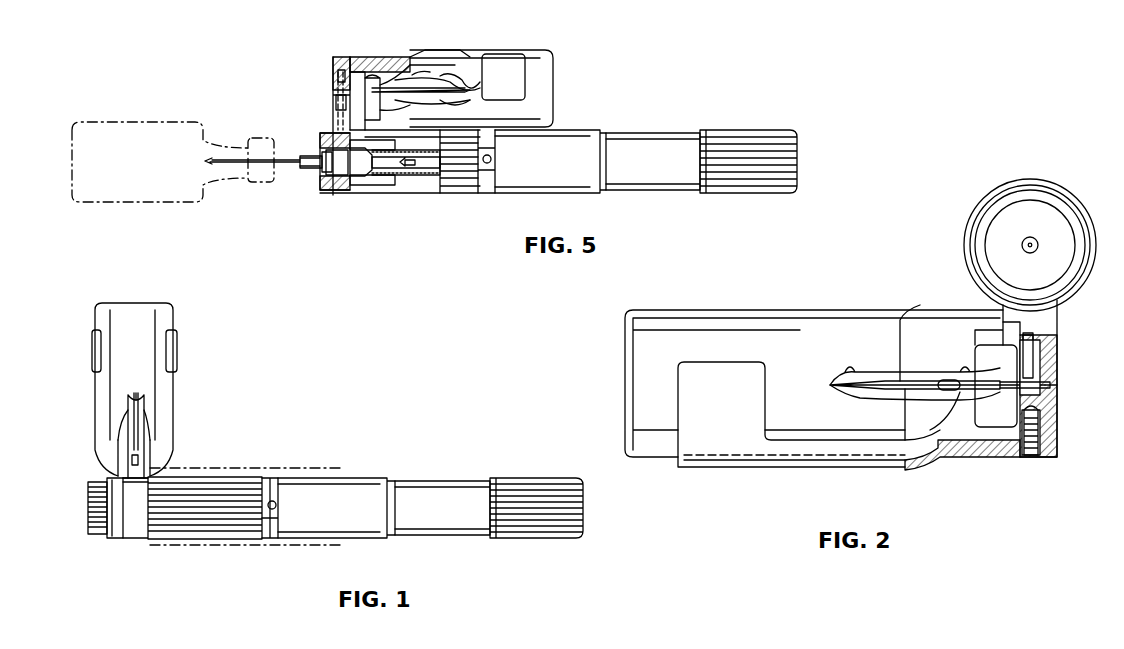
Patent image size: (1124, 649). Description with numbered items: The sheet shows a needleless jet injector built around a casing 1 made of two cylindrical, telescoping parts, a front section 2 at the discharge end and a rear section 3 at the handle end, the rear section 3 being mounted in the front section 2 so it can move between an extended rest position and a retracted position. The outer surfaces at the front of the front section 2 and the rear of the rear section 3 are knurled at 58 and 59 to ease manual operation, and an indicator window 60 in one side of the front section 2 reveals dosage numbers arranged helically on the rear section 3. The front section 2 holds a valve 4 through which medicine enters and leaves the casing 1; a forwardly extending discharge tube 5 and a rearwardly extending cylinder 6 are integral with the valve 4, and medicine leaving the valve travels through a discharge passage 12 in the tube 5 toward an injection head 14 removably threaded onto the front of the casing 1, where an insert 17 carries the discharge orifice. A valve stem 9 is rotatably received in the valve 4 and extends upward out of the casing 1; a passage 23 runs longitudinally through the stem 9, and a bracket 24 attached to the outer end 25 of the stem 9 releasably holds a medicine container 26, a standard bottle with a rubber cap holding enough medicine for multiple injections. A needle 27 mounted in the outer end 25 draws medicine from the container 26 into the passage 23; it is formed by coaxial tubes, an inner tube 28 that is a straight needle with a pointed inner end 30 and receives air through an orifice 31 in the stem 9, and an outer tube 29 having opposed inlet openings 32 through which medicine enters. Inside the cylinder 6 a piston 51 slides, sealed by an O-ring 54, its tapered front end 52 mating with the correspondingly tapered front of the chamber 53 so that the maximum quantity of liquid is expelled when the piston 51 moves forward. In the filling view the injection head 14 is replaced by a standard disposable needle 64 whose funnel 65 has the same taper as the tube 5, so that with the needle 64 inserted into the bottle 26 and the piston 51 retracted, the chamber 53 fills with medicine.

In FIG. 5, the casing 1 is at (624, 113).
In FIG. 1, the casing 1 is at (408, 452).
In FIG. 5, the front section 2 is at (588, 132).
In FIG. 1, the front section 2 is at (350, 487).
In FIG. 5, the rear section 3 is at (660, 132).
In FIG. 1, the rear section 3 is at (460, 487).
In FIG. 5, the valve 4 is at (342, 220).
In FIG. 1, the valve 4 is at (102, 560).
In FIG. 5, the discharge tube 5 is at (320, 150).
In FIG. 5, the cylinder 6 is at (376, 190).
In FIG. 5, the valve stem 9 is at (346, 194).
In FIG. 2, the valve stem 9 is at (1055, 345).
In FIG. 5, the discharge passage 12 is at (312, 172).
In FIG. 1, the injection head 14 is at (95, 528).
In FIG. 2, the injection head 14 is at (1060, 205).
In FIG. 1, the insert 17 is at (91, 503).
In FIG. 2, the insert 17 is at (1030, 240).
In FIG. 5, the passage 23 is at (330, 108).
In FIG. 2, the passage 23 is at (1040, 370).
In FIG. 5, the bracket 24 is at (378, 50).
In FIG. 1, the bracket 24 is at (178, 340).
In FIG. 2, the bracket 24 is at (735, 462).
In FIG. 5, the outer end 25 is at (333, 70).
In FIG. 2, the outer end 25 is at (1045, 425).
In FIG. 5, the medicine container 26 is at (133, 206).
In FIG. 1, the medicine container 26 is at (142, 346).
In FIG. 2, the medicine container 26 is at (808, 360).
In FIG. 5, the needle 27 is at (445, 75).
In FIG. 1, the needle 27 is at (145, 438).
In FIG. 2, the needle 27 is at (898, 375).
In FIG. 5, the inner tube 28 is at (462, 82).
In FIG. 1, the inner tube 28 is at (140, 420).
In FIG. 2, the inner tube 28 is at (888, 378).
In FIG. 5, the outer tube 29 is at (362, 62).
In FIG. 1, the outer tube 29 is at (142, 468).
In FIG. 2, the outer tube 29 is at (1005, 382).
In FIG. 5, the pointed inner end 30 is at (470, 82).
In FIG. 1, the pointed inner end 30 is at (136, 405).
In FIG. 2, the pointed inner end 30 is at (855, 395).
In FIG. 2, the orifice 31 is at (1052, 388).
In FIG. 5, the inlet openings 32 is at (412, 62).
In FIG. 1, the inlet openings 32 is at (128, 456).
In FIG. 2, the inlet openings 32 is at (935, 394).
In FIG. 5, the piston 51 is at (450, 185).
In FIG. 5, the tapered front end 52 is at (418, 180).
In FIG. 5, the chamber 53 is at (388, 172).
In FIG. 5, the O-ring 54 is at (408, 132).
In FIG. 1, the knurled surface 58 is at (158, 528).
In FIG. 5, the knurled surface 59 is at (730, 132).
In FIG. 1, the knurled surface 59 is at (512, 525).
In FIG. 5, the indicator window 60 is at (492, 156).
In FIG. 1, the indicator window 60 is at (272, 530).
In FIG. 5, the needle 64 is at (212, 160).
In FIG. 5, the funnel 65 is at (290, 152).